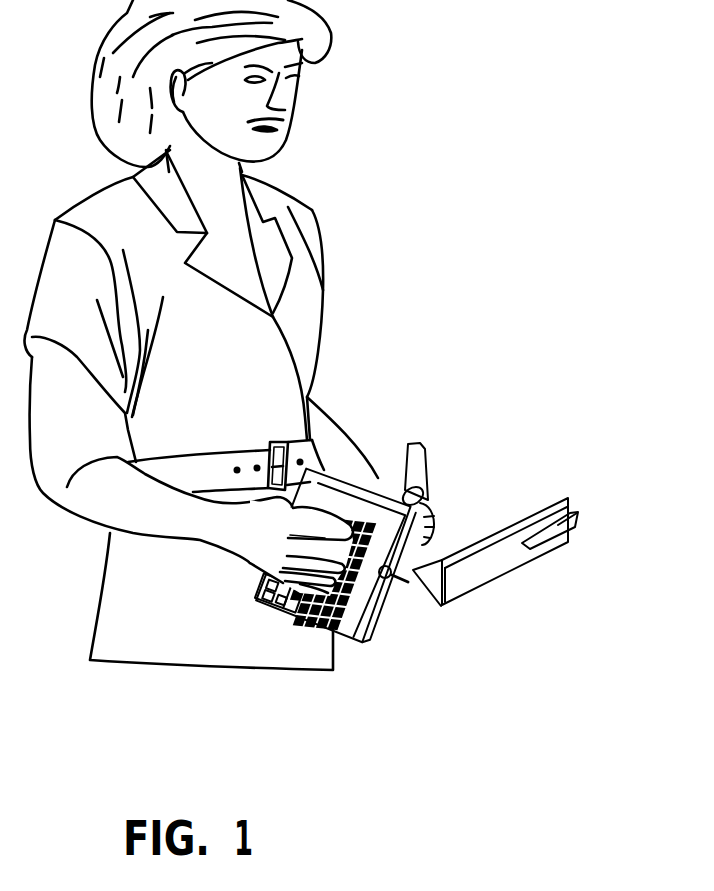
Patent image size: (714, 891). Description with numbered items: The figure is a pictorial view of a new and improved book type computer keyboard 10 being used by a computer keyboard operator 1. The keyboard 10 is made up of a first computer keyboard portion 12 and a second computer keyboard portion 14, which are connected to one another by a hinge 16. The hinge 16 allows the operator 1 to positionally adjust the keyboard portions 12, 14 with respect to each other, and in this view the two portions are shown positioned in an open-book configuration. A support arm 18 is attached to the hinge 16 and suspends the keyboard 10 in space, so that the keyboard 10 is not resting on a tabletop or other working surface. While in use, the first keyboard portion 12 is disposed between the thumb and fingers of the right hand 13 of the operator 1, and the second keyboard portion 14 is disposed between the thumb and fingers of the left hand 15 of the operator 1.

The computer keyboard operator 1 is at (312, 207).
The computer keyboard 10 is at (446, 524).
The first computer keyboard portion 12 is at (341, 481).
The right hand 13 is at (303, 570).
The second computer keyboard portion 14 is at (424, 447).
The left hand 15 is at (375, 478).
The hinge 16 is at (430, 504).
The support arm 18 is at (547, 548).